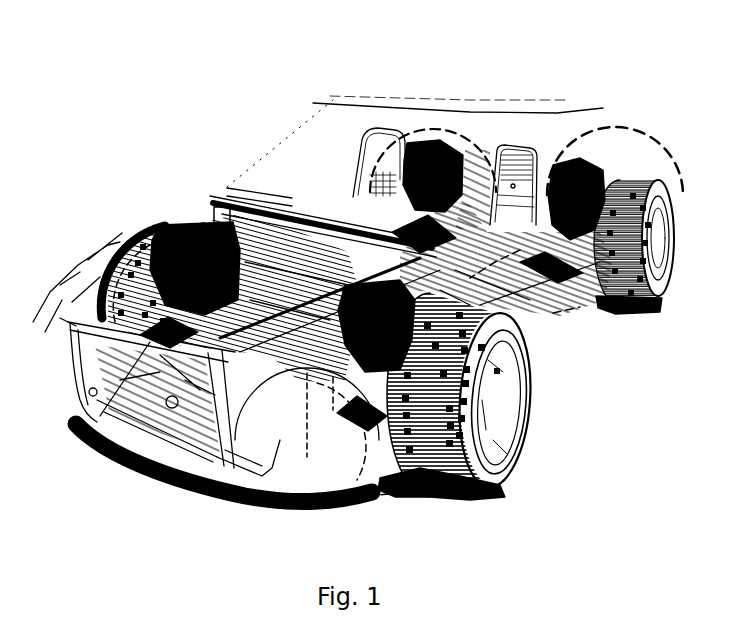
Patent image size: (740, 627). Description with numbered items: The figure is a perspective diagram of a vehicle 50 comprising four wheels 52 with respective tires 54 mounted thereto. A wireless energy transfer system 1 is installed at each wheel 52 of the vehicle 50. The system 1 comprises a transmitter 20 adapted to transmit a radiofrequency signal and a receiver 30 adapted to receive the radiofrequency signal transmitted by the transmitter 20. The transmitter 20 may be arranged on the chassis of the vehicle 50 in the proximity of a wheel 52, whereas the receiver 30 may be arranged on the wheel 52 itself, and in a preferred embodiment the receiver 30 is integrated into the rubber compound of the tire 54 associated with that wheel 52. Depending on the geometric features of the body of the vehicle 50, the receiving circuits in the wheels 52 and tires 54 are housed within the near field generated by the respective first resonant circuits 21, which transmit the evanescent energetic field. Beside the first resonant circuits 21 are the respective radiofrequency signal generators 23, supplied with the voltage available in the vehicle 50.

The vehicle 50 is at (214, 118).
The wireless energy transfer system 1 is at (172, 224).
The transmitter 20 is at (319, 503).
The first resonant circuit 21 is at (216, 488).
The radiofrequency signal generator 23 is at (266, 497).
The receiver 30 is at (472, 378).
The wheel 52 is at (532, 430).
The tire 54 is at (475, 473).